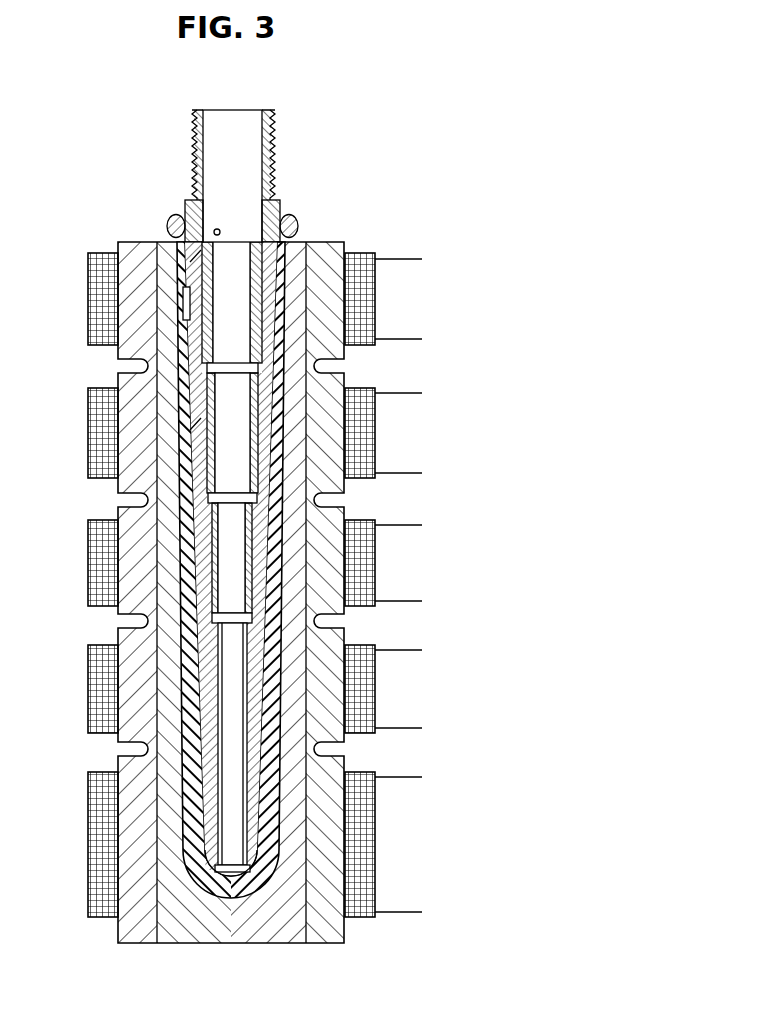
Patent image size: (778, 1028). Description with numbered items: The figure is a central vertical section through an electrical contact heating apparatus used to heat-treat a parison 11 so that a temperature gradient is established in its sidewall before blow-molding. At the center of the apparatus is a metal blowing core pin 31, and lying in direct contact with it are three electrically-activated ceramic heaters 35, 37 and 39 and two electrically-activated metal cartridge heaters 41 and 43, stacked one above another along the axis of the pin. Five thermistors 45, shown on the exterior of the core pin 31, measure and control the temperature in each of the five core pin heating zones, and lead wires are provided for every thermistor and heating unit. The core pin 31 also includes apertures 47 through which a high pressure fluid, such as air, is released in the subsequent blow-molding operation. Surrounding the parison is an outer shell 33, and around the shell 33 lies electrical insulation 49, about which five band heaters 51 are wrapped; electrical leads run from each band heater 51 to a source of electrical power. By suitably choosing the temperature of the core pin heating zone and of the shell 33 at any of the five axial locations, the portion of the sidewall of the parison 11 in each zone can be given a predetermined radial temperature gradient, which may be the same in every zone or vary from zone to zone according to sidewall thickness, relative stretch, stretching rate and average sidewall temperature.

The parison 11 is at (227, 895).
The metal blowing core pin 31 is at (278, 205).
The outer shell 33 is at (287, 933).
The electrically-activated ceramic heater 35 is at (246, 310).
The electrically-activated ceramic heater 37 is at (256, 440).
The electrically-activated ceramic heater 39 is at (248, 558).
The electrically-activated metal cartridge heater 41 is at (233, 692).
The electrically-activated metal cartridge heater 43 is at (242, 902).
The thermistor 45 is at (183, 305).
The aperture 47 is at (219, 229).
The electrical insulation 49 is at (326, 256).
The band heater 51 is at (88, 297).